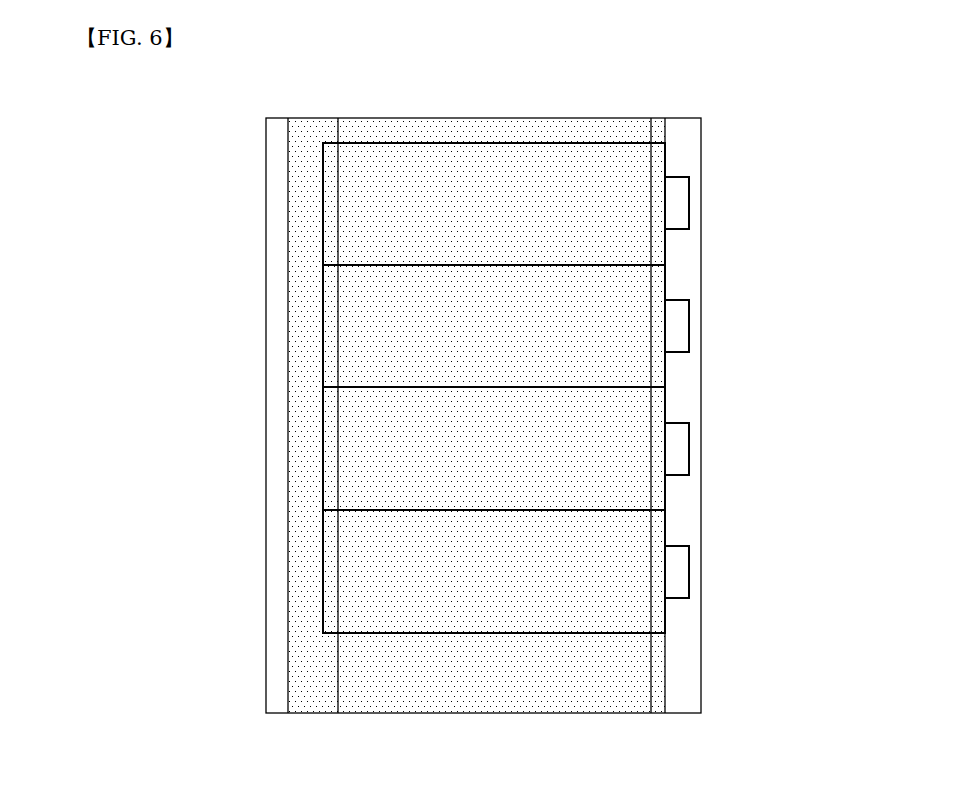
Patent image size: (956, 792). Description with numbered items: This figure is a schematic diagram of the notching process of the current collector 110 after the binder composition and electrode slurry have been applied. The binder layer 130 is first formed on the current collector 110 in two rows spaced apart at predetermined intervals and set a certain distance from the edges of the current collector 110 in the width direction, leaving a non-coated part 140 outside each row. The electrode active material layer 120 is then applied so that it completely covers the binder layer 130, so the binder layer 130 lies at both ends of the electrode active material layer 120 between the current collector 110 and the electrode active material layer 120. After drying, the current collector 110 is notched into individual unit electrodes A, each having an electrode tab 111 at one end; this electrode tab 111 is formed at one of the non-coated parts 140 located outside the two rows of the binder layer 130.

The current collector 110 is at (702, 192).
The electrode tab 111 is at (688, 441).
The electrode active material layer 120 is at (607, 668).
The binder layer 130 is at (305, 403).
The non-coated part 140 is at (282, 313).
The unit electrode A is at (322, 571).